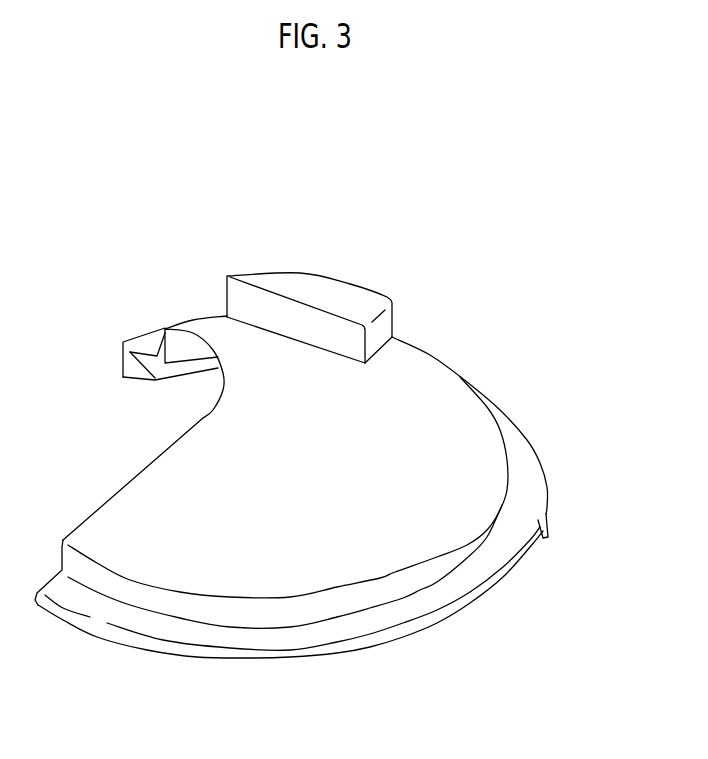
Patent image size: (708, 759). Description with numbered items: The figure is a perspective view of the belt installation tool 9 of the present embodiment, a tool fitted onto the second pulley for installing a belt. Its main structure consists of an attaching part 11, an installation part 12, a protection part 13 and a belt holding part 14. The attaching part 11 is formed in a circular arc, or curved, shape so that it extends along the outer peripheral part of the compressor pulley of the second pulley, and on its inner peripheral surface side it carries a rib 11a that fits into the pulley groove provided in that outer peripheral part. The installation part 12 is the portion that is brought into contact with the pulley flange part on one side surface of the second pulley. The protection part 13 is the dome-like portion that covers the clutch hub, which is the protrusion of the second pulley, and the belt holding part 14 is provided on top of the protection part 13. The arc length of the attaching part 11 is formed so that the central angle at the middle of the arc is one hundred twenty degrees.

The belt installation tool 9 is at (143, 193).
The attaching part 11 is at (140, 333).
The rib 11a is at (148, 367).
The installation part 12 is at (530, 455).
The protection part 13 is at (300, 545).
The belt holding part 14 is at (333, 277).